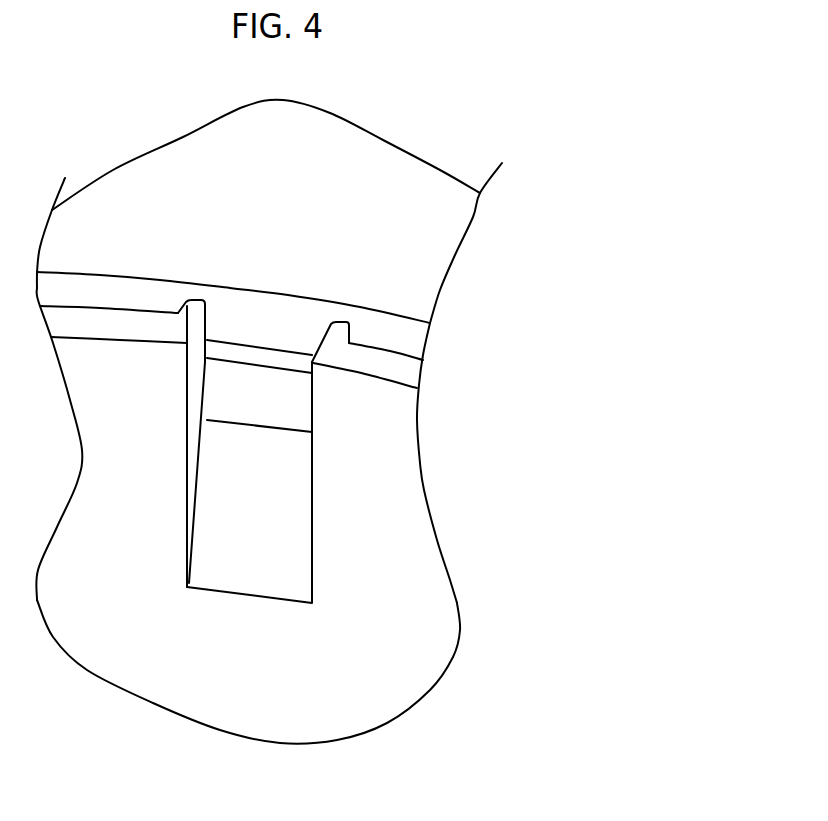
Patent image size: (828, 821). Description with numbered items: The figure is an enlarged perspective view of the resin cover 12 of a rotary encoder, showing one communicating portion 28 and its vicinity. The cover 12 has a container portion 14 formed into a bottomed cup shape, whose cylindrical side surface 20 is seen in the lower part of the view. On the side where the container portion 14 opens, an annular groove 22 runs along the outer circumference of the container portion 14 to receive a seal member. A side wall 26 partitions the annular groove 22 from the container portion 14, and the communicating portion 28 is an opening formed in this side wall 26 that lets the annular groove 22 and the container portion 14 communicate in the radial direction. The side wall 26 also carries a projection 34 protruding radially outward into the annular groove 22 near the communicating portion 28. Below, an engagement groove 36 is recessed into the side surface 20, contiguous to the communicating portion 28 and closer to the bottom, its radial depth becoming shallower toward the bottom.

The cover 12 is at (372, 113).
The container portion 14 is at (337, 707).
The side surface 20 is at (385, 468).
The annular groove 22 is at (102, 290).
The side wall 26 is at (407, 372).
The communicating portion 28 is at (195, 347).
The projection 34 is at (340, 330).
The engagement groove 36 is at (255, 570).